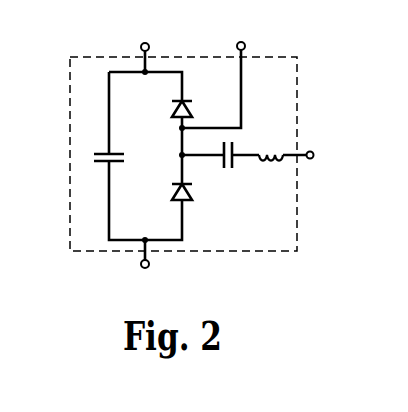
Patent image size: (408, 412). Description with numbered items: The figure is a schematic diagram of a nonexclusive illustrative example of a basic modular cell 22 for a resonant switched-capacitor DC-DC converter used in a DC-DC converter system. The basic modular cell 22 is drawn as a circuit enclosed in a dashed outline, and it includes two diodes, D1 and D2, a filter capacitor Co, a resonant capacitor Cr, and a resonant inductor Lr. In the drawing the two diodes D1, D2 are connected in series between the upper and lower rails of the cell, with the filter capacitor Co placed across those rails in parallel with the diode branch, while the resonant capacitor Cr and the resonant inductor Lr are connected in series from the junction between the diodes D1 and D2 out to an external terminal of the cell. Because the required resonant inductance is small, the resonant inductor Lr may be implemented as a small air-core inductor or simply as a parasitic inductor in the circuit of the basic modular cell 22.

The basic modular cell 22 is at (104, 56).
The diode D1 is at (168, 185).
The diode D2 is at (169, 104).
The filter capacitor Co is at (109, 155).
The resonant capacitor Cr is at (227, 170).
The resonant inductor Lr is at (271, 176).